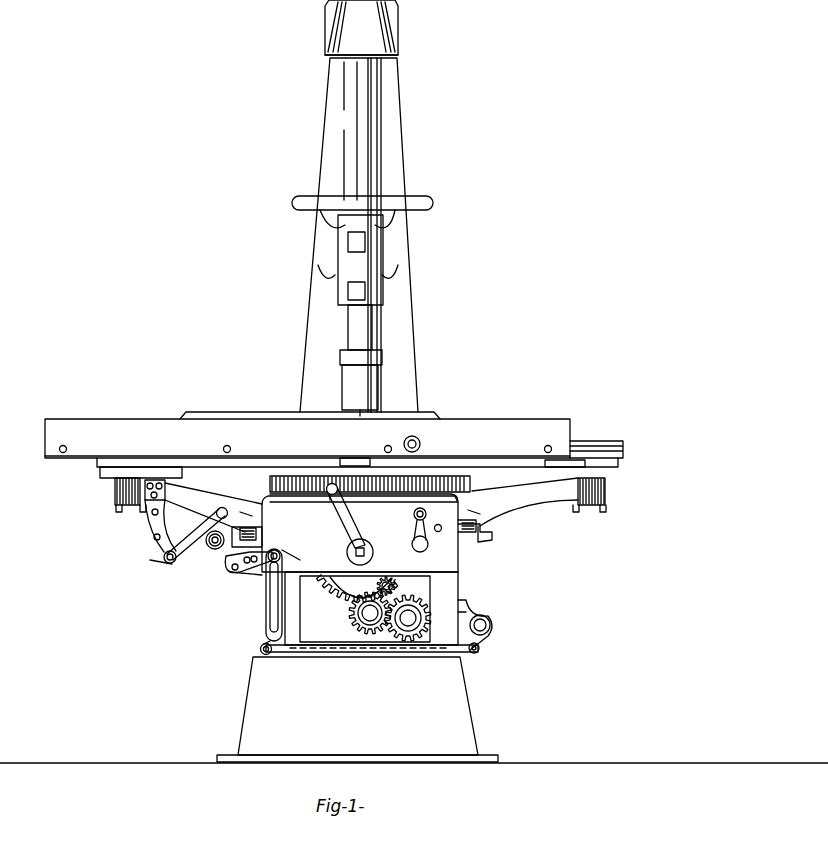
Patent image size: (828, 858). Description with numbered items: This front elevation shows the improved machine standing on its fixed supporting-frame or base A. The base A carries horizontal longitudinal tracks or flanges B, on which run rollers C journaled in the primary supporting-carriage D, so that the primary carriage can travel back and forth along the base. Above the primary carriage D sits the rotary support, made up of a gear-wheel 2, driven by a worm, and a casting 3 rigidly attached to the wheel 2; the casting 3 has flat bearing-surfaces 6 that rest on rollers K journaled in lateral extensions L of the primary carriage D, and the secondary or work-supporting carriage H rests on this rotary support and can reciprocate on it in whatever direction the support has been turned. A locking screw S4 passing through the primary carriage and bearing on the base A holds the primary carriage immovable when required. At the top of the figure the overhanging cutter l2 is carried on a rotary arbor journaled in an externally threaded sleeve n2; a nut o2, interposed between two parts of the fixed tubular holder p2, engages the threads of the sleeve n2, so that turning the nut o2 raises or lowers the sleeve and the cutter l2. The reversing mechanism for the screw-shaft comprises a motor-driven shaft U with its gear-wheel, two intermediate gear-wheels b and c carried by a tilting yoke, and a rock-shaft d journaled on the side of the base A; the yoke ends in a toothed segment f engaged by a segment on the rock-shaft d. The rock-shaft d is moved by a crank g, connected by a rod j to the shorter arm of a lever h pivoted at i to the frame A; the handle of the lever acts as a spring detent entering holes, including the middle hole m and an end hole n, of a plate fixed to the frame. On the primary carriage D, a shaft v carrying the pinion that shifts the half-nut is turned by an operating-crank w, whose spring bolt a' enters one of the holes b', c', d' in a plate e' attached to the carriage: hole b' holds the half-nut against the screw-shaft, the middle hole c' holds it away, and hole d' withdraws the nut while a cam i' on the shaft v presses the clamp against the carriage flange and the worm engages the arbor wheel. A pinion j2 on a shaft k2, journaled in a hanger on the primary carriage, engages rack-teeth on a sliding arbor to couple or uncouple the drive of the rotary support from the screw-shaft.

The sleeve n2 is at (310, 209).
The fixed tubular holder p2 is at (384, 152).
The nut o2 is at (388, 194).
The overhanging cutter l2 is at (379, 396).
The secondary or work-supporting carriage H is at (334, 439).
The screw S4 is at (472, 475).
The casting 3 is at (370, 476).
The primary supporting-carriage D is at (440, 498).
The flat bearing-surfaces 6 is at (113, 492).
The lateral extensions L is at (120, 512).
The hole d' is at (142, 507).
The middle hole c' is at (147, 530).
The spring handle or bolt a' is at (163, 576).
The hole b' is at (145, 573).
The plate e' is at (196, 534).
The shaft v is at (217, 503).
The operating-crank w is at (205, 554).
The toothed segment f is at (228, 558).
The hole m is at (249, 576).
The cam i' is at (230, 591).
The horizontal longitudinal tracks or flanges B is at (258, 540).
The rollers C is at (364, 520).
The end hole n is at (296, 546).
The rollers K is at (284, 558).
The gear-wheel 2 is at (361, 525).
The shaft k2 is at (412, 540).
The pinion j2 is at (438, 536).
The fixed supporting-frame or base A is at (371, 608).
The intermediate gear-wheel b is at (384, 620).
The intermediate gear-wheel c is at (398, 580).
The rod j is at (352, 652).
The pivot i is at (248, 646).
The lever h is at (262, 618).
The rock-shaft d is at (491, 625).
The crank g is at (480, 652).
The shaft U is at (414, 710).